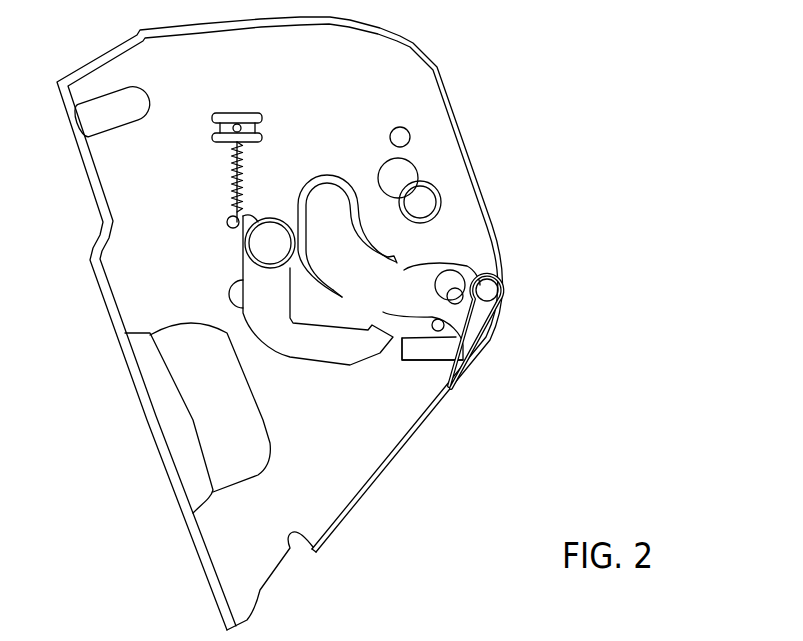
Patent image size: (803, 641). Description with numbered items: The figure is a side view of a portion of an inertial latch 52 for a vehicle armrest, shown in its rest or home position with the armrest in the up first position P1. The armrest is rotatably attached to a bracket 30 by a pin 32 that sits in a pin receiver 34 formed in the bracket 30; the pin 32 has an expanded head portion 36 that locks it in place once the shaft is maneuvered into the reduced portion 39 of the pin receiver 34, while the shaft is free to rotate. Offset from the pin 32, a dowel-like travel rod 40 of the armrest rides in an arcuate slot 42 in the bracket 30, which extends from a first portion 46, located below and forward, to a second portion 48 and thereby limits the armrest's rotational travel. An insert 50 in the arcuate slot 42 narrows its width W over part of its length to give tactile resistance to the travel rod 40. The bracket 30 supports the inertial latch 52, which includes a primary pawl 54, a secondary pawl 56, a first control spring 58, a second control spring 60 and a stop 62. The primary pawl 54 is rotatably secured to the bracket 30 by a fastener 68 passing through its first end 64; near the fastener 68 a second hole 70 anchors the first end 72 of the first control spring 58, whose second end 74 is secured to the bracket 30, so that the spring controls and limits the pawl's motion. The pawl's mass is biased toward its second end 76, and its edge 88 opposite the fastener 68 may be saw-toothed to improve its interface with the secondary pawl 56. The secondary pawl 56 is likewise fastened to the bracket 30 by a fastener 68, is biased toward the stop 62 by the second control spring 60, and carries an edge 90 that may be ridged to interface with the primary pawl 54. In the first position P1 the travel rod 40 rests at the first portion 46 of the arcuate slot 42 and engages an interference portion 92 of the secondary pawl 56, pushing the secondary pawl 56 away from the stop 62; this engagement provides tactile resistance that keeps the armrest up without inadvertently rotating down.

The bracket 30 is at (392, 62).
The inertial latch 52 is at (580, 84).
The pin receiver 34 is at (402, 168).
The reduced portion 39 is at (434, 177).
The pin 32 is at (420, 200).
The expanded head portion 36 is at (428, 217).
The first portion 46 is at (469, 261).
The second portion 48 is at (311, 192).
The insert 50 is at (327, 173).
The arcuate slot 42 is at (339, 205).
The second end 74 is at (232, 142).
The first control spring 58 is at (232, 177).
The first end 72 is at (241, 207).
The second hole 70 is at (226, 222).
The first end 64 is at (258, 240).
The primary pawl 54 is at (262, 298).
The second end 76 is at (363, 346).
The edge 88 is at (392, 331).
The secondary pawl 56 is at (462, 352).
The interference portion 92 is at (452, 346).
The travel rod 40 is at (458, 267).
The fastener 68 is at (487, 290).
The second control spring 60 is at (500, 312).
The stop 62 is at (439, 332).
The edge 90 is at (402, 350).
The first position P1 is at (497, 432).
The width W is at (402, 306).